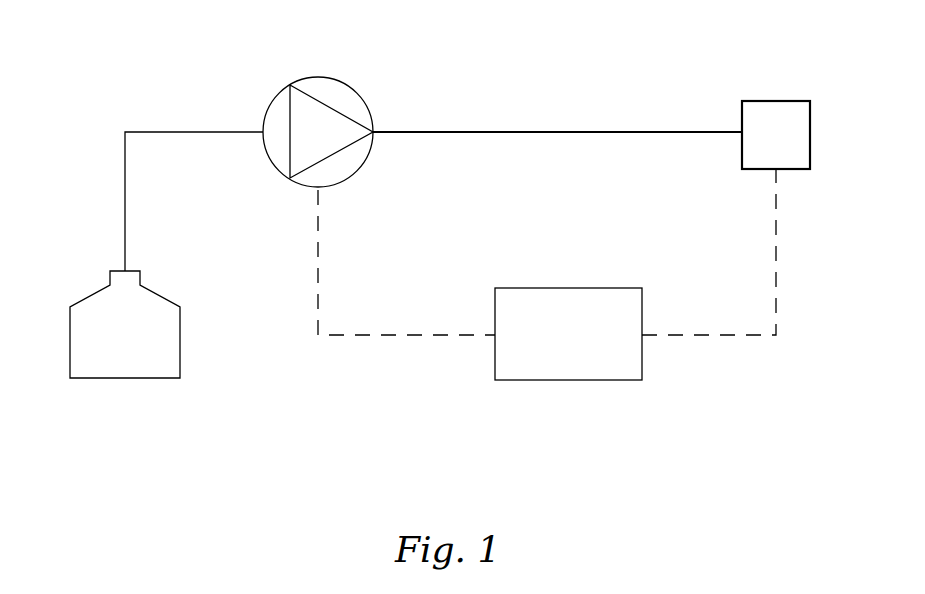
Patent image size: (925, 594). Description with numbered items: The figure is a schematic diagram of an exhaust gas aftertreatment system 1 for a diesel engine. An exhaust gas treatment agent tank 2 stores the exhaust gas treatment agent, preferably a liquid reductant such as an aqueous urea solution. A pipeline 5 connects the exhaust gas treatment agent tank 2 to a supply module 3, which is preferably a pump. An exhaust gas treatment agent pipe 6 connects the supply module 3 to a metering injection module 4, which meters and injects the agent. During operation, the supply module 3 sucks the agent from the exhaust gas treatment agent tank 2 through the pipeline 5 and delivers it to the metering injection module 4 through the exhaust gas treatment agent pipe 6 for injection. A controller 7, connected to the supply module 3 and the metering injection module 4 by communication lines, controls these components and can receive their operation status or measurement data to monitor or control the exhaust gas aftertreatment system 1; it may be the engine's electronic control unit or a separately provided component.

The exhaust gas aftertreatment system 1 is at (404, 421).
The exhaust gas treatment agent tank 2 is at (165, 360).
The supply module 3 is at (287, 97).
The metering injection module 4 is at (788, 141).
The pipeline 5 is at (125, 218).
The exhaust gas treatment agent pipe 6 is at (509, 132).
The controller 7 is at (593, 382).